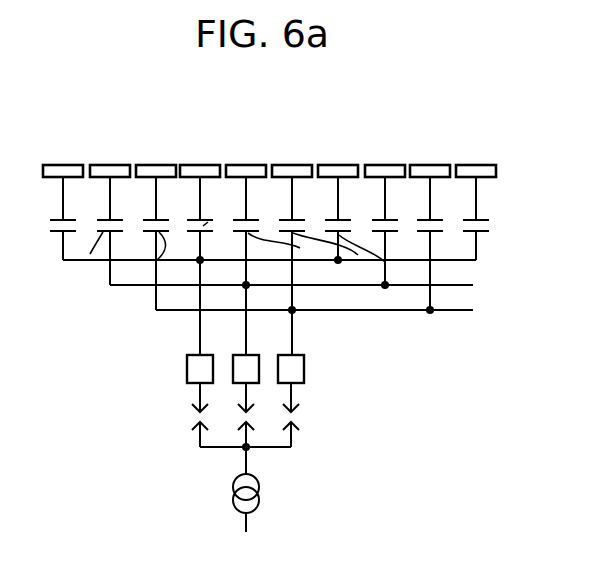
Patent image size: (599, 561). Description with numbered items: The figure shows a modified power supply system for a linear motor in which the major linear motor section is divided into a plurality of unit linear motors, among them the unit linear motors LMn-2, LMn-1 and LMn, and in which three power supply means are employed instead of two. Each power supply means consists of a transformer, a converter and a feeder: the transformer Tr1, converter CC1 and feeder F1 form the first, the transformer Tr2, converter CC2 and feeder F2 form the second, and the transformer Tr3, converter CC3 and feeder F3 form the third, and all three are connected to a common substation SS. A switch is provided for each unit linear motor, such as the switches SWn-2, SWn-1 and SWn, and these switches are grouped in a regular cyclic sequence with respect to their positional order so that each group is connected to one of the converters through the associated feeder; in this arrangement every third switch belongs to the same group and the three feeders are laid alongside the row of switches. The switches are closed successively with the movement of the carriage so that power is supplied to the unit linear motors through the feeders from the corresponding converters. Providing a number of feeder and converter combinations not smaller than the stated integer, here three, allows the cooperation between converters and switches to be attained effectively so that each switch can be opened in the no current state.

The unit linear motor LMn-2 is at (114, 212).
The unit linear motor LMn-1 is at (155, 163).
The unit linear motor LMn is at (200, 247).
The switch SWn-2 is at (90, 254).
The switch SWn-1 is at (157, 260).
The switch SWn is at (208, 222).
The feeder F1 is at (468, 263).
The feeder F2 is at (468, 288).
The feeder F3 is at (468, 313).
The converter CC1 is at (218, 350).
The converter CC2 is at (264, 350).
The converter CC3 is at (308, 350).
The transformer Tr1 is at (211, 402).
The transformer Tr2 is at (257, 402).
The transformer Tr3 is at (303, 402).
The substation SS is at (259, 489).